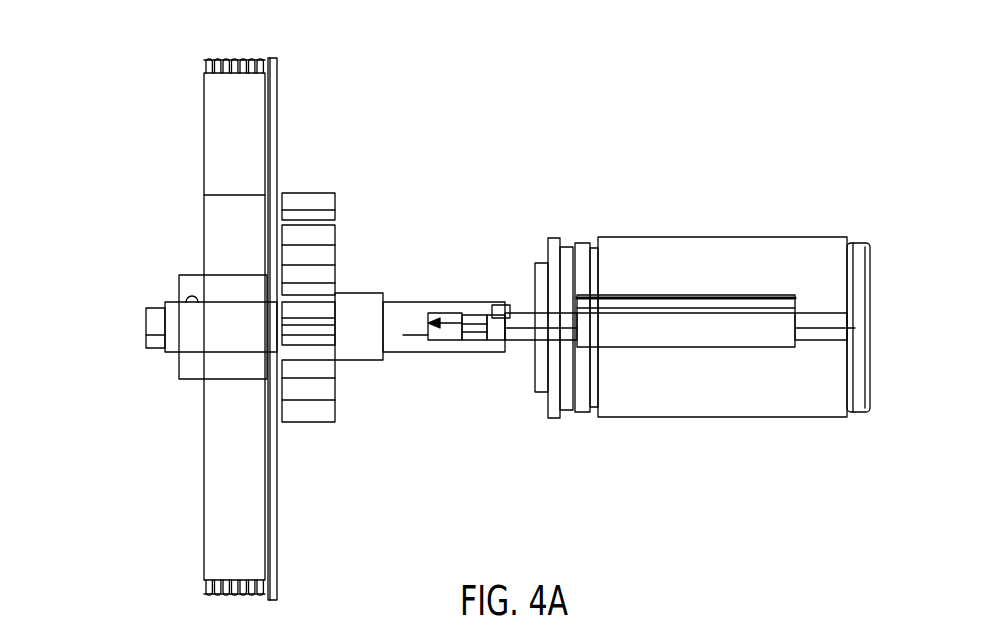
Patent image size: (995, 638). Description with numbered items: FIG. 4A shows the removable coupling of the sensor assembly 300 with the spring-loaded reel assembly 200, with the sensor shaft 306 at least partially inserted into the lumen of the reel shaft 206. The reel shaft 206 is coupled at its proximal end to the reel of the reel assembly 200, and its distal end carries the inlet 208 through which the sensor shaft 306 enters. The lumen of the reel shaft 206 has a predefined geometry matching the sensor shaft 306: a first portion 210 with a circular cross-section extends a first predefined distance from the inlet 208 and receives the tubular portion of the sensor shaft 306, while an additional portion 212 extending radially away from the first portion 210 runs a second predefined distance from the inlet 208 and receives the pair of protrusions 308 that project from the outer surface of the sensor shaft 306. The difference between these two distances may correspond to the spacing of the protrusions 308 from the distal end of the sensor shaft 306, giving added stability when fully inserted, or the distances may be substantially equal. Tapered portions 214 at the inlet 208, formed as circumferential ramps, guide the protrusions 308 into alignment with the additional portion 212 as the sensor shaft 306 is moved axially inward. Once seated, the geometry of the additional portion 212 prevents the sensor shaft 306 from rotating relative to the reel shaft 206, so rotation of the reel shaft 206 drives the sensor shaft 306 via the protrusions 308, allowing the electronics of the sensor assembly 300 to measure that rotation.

The reel assembly 200 is at (157, 73).
The reel shaft 206 is at (408, 303).
The inlet 208 is at (508, 347).
The first portion 210 is at (450, 312).
The additional portion 212 is at (473, 312).
The tapered portions 214 is at (498, 312).
The sensor assembly 300 is at (748, 183).
The sensor shaft 306 is at (514, 316).
The protrusions 308 is at (490, 306).